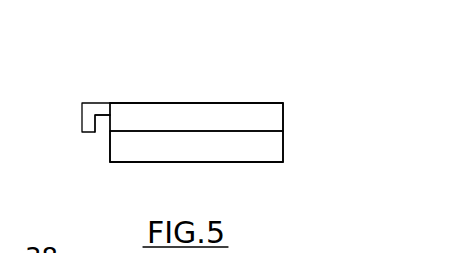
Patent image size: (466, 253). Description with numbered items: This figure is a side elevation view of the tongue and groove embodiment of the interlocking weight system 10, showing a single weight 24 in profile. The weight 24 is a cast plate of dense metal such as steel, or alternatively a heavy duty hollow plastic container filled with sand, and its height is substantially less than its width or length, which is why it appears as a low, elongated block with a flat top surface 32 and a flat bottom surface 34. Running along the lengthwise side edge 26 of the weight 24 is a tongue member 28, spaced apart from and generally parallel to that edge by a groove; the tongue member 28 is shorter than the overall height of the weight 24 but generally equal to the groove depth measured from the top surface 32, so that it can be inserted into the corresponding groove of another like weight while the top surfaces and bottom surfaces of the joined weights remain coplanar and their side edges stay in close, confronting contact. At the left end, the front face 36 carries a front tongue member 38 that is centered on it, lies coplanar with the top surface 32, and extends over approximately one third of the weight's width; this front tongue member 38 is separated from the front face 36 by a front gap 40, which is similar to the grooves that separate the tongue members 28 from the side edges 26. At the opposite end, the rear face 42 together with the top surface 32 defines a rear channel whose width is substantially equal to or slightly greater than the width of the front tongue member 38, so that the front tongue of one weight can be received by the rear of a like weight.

The interlocking weight system 10 is at (207, 118).
The weight 24 is at (287, 120).
The side edge 26 is at (225, 120).
The tongue member 28 is at (174, 150).
The top surface 32 is at (174, 102).
The bottom surface 34 is at (246, 162).
The front face 36 is at (110, 146).
The front tongue member 38 is at (82, 120).
The front gap 40 is at (125, 88).
The rear face 42 is at (283, 141).